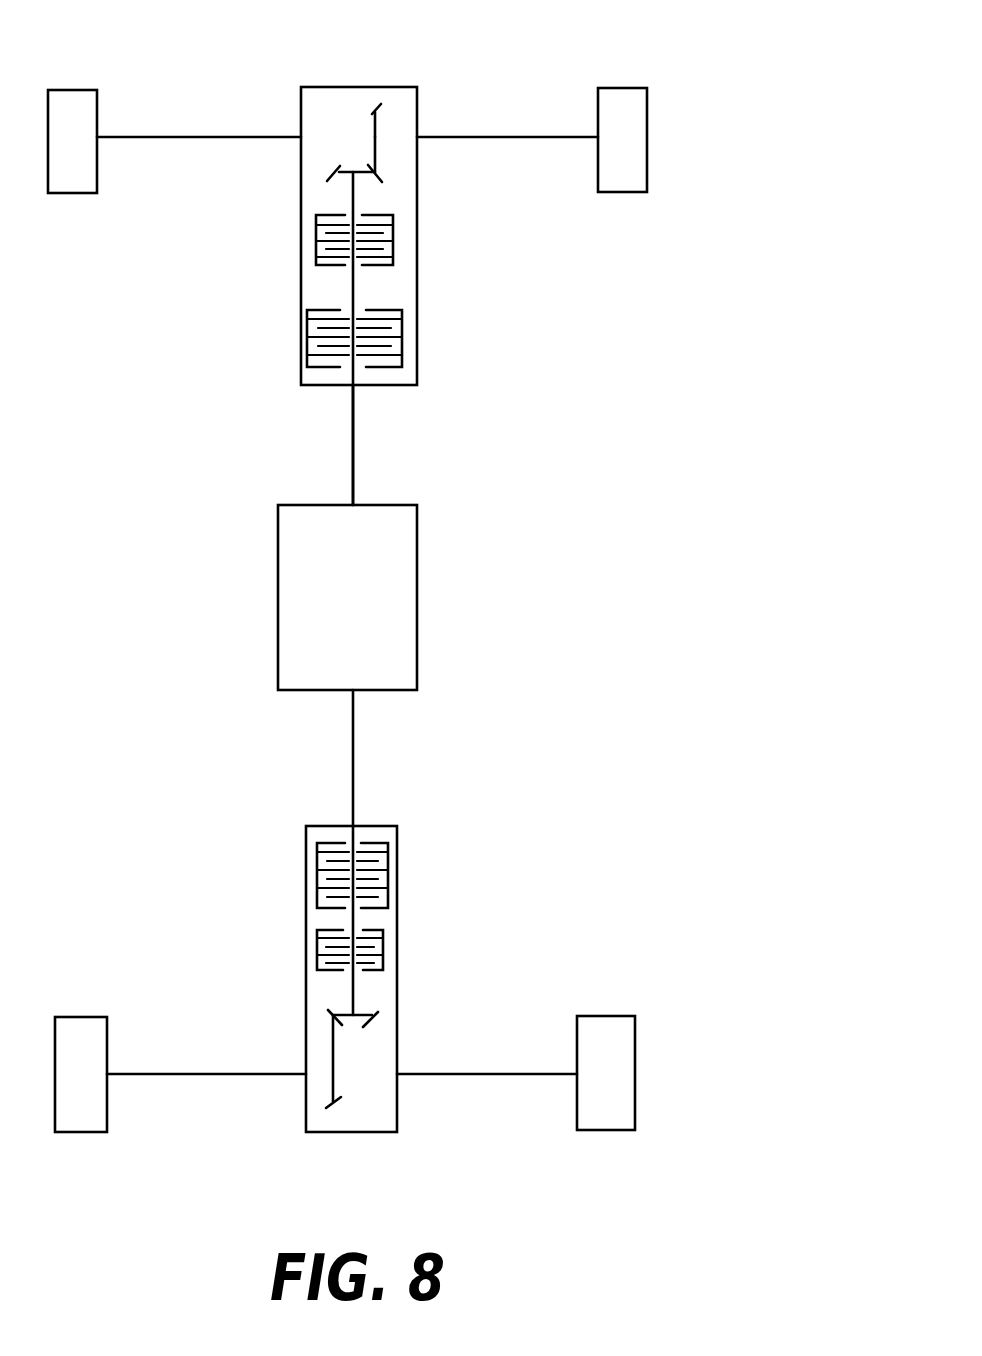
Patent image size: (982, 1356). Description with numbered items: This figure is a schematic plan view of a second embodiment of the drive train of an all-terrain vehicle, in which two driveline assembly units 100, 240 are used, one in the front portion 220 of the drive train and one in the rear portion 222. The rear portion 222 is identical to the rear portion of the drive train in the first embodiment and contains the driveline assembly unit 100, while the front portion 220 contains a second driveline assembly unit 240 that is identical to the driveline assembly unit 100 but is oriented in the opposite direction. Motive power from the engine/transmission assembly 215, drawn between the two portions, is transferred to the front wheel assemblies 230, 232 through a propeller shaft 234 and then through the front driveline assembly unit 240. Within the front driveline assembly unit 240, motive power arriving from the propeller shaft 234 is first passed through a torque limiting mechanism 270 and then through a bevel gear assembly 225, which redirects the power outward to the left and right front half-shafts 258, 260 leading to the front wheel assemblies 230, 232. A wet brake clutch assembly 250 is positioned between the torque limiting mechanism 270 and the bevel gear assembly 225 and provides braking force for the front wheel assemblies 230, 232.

The driveline assembly unit 100 is at (390, 918).
The engine/transmission assembly 215 is at (405, 592).
The front portion 220 is at (253, 205).
The rear portion 222 is at (280, 1009).
The bevel gear assembly 225 is at (393, 118).
The front wheel assembly 230 is at (77, 99).
The front wheel assembly 232 is at (634, 99).
The propeller shaft 234 is at (352, 441).
The driveline assembly unit 240 is at (407, 282).
The wet brake clutch assembly 250 is at (316, 236).
The front half-shaft 258 is at (200, 137).
The front half-shaft 260 is at (503, 137).
The torque limiting mechanism 270 is at (397, 337).